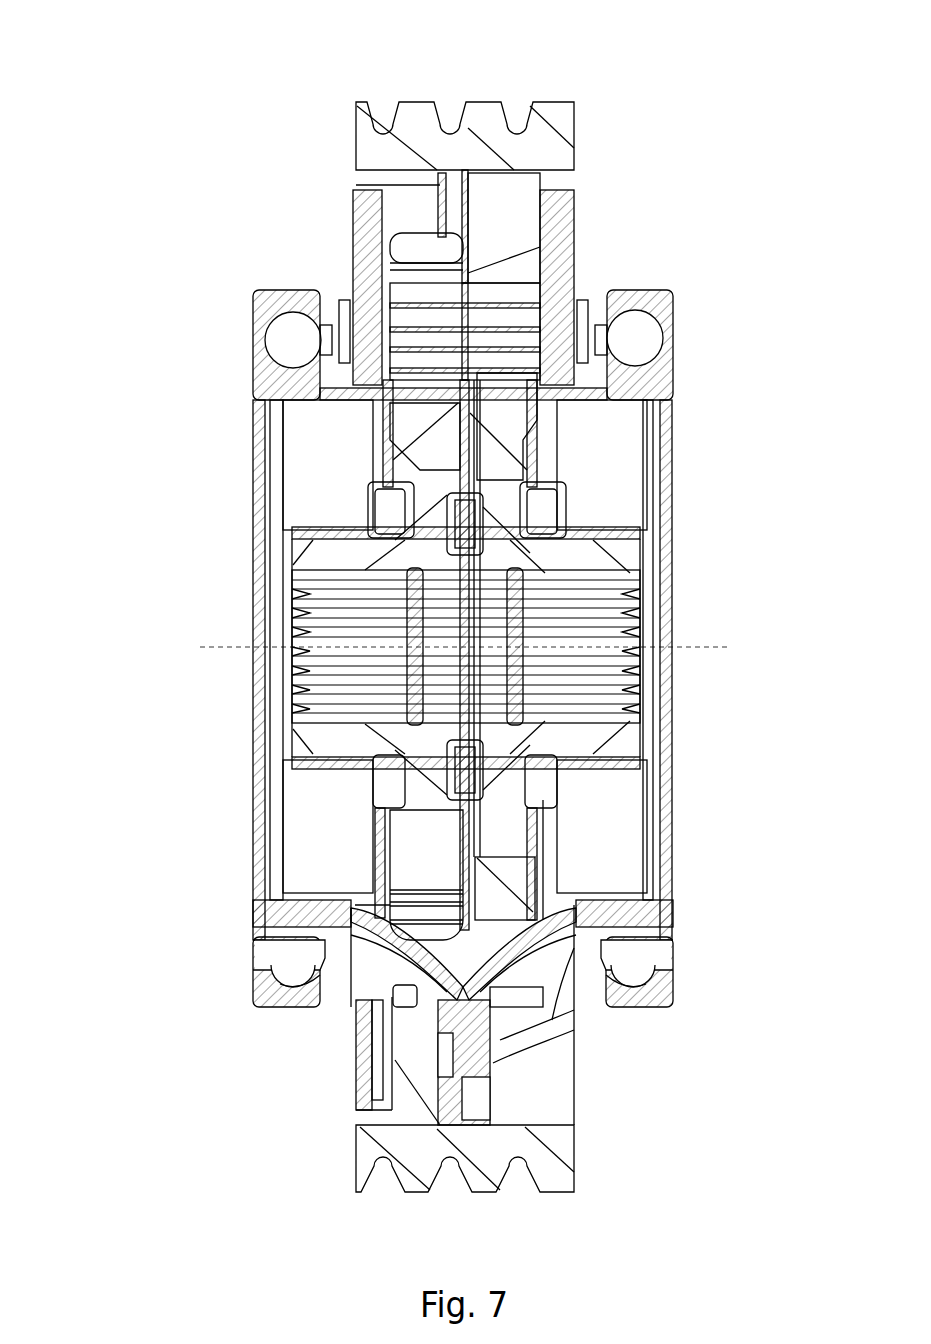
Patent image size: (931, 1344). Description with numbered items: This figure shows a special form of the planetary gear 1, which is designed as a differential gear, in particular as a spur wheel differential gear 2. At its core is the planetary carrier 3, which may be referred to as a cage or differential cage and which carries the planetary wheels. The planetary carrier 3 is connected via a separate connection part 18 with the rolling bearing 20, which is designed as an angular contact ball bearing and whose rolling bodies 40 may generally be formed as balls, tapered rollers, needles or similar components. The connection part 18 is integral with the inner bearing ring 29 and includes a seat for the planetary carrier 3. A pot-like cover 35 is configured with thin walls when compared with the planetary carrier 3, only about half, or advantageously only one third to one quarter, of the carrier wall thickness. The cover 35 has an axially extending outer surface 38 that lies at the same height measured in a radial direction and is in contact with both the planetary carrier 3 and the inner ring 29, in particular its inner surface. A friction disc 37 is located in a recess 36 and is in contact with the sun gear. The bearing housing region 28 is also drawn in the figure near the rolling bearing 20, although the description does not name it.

The planetary gear 1 is at (492, 602).
The spur wheel differential gear 2 is at (574, 90).
The planetary carrier 3 is at (577, 205).
The connection part 18 is at (350, 395).
The rolling bearing 20 is at (250, 265).
The bearing housing 28 is at (664, 304).
The inner bearing ring 29 is at (667, 390).
The pot-like cover 35 is at (548, 437).
The recess 36 is at (530, 489).
The friction disc 37 is at (545, 512).
The axially extending outer surface 38 is at (600, 378).
The rolling bodies 40 is at (642, 332).